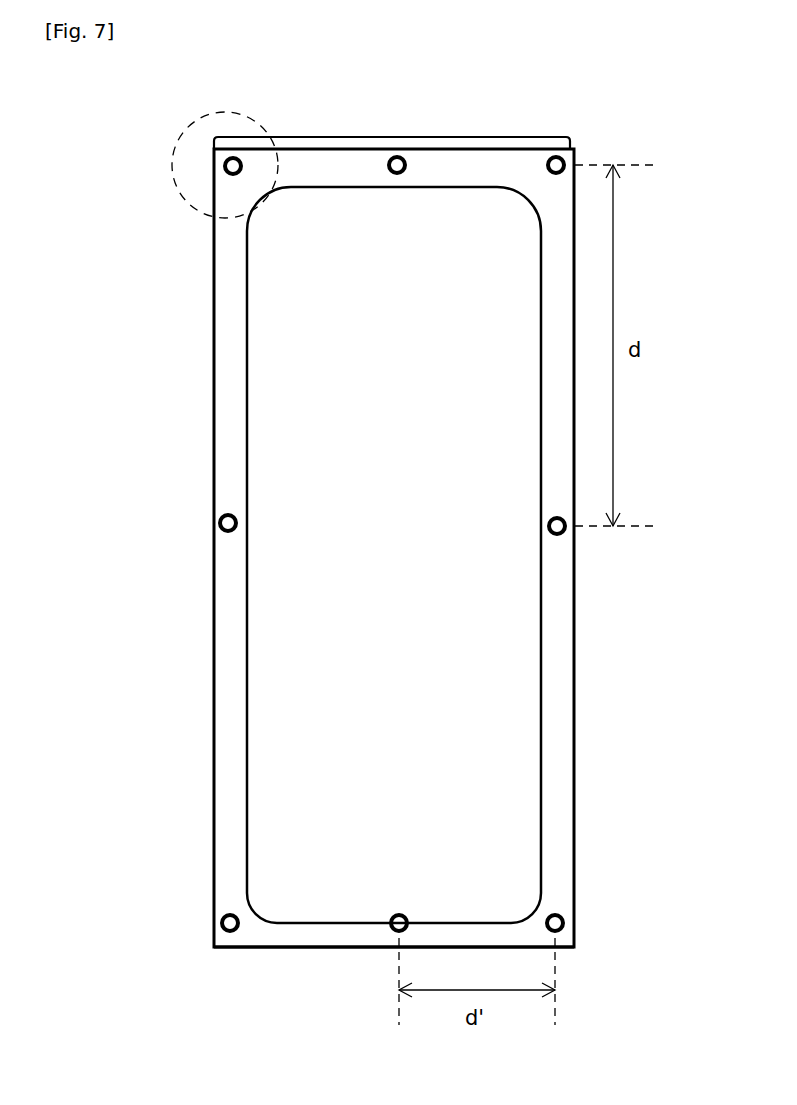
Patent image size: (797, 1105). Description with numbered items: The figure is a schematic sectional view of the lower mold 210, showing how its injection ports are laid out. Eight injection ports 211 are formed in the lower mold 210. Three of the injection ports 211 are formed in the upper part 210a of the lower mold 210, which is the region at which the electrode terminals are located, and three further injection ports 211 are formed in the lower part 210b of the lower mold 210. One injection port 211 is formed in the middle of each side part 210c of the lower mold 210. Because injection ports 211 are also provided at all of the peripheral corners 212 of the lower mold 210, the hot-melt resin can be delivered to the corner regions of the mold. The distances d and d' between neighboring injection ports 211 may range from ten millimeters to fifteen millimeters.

The lower mold 210 is at (225, 425).
The upper part of the lower mold 210a is at (453, 165).
The lower part of the lower mold 210b is at (275, 936).
The side part of the lower mold 210c is at (556, 575).
The injection port 211 is at (229, 522).
The peripheral corner 212 is at (197, 163).